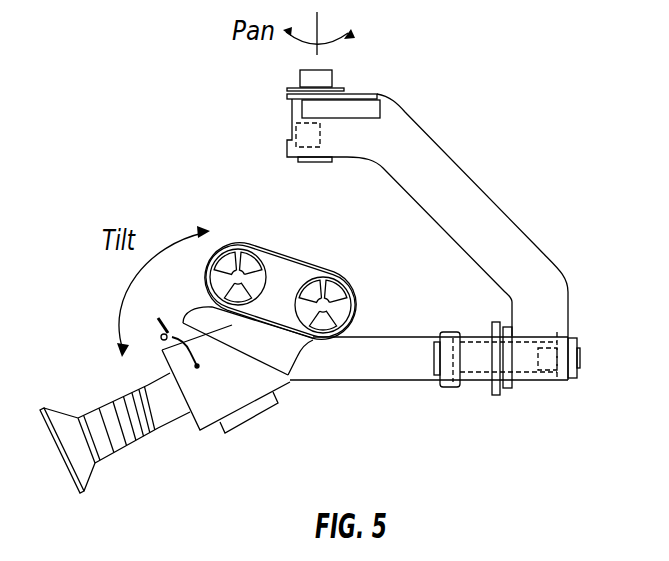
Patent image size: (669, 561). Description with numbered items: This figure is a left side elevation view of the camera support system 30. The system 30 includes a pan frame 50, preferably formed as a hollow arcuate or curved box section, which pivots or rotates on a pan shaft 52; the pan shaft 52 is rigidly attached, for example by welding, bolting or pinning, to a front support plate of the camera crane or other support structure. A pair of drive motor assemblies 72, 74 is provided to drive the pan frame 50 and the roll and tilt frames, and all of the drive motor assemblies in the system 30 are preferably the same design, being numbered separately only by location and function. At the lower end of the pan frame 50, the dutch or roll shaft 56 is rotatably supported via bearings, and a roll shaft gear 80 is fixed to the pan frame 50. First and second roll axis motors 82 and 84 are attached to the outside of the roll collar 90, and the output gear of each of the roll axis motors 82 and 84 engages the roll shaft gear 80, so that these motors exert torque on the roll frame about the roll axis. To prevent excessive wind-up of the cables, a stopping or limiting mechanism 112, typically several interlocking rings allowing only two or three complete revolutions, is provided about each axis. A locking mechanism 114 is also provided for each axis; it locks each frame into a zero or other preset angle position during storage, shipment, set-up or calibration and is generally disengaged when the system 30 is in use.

The support system 30 is at (492, 164).
The pan frame 50 is at (525, 251).
The pan shaft 52 is at (332, 70).
The dutch or roll shaft 56 is at (453, 333).
The drive motor assembly 72 is at (354, 368).
The drive motor assembly 74 is at (372, 108).
The roll shaft gear 80 is at (432, 367).
The first roll axis motor 82 is at (495, 321).
The second roll axis motor 84 is at (499, 395).
The roll collar 90 is at (482, 368).
The limiting mechanism 112 is at (296, 128).
The locking mechanism 114 is at (297, 156).